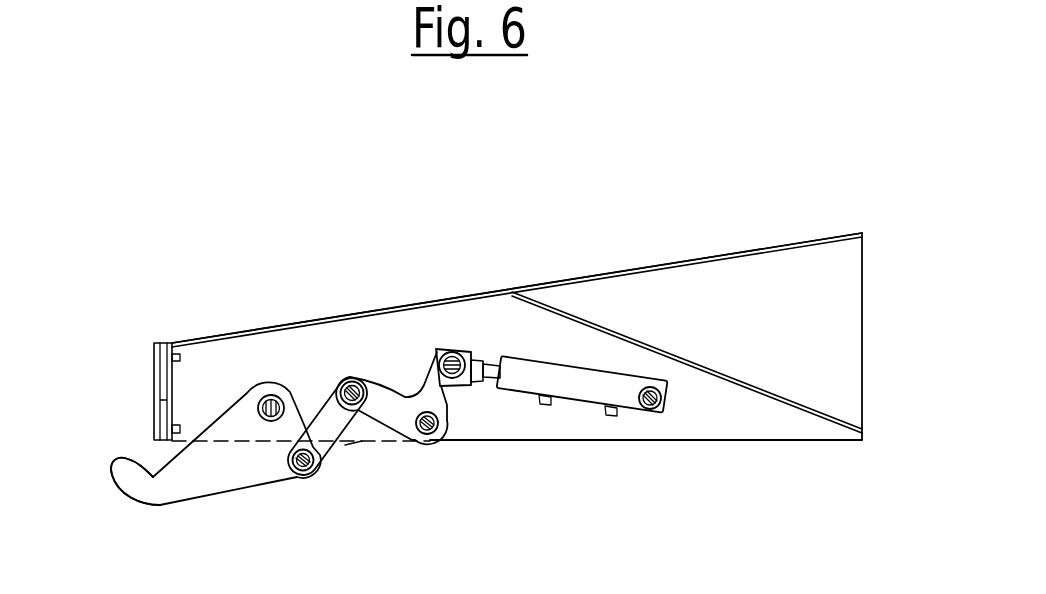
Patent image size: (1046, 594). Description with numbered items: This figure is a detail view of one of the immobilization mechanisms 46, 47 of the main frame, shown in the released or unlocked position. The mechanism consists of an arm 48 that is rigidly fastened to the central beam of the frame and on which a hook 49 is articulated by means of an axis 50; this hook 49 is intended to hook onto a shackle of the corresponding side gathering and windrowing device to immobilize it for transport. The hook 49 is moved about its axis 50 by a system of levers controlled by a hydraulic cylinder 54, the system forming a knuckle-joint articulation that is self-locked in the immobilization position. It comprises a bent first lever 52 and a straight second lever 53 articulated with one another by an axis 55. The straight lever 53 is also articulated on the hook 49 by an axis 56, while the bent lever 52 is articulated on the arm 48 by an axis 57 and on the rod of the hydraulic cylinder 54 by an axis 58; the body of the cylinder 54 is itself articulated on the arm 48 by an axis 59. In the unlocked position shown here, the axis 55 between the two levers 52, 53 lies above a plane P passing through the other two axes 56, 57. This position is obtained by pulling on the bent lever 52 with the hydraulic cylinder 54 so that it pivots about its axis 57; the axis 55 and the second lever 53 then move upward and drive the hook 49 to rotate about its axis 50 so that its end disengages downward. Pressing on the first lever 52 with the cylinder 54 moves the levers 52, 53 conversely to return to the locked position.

The immobilization mechanism 46 is at (493, 293).
The immobilization mechanism 47 is at (517, 288).
The arm 48 is at (550, 318).
The hook 49 is at (158, 493).
The axis 50 is at (272, 398).
The first lever 52 is at (443, 392).
The second lever 53 is at (328, 437).
The hydraulic cylinder 54 is at (615, 390).
The axis 55 is at (355, 380).
The axis 56 is at (307, 472).
The axis 57 is at (429, 433).
The axis 58 is at (450, 352).
The axis 59 is at (657, 418).
The plane P is at (358, 444).